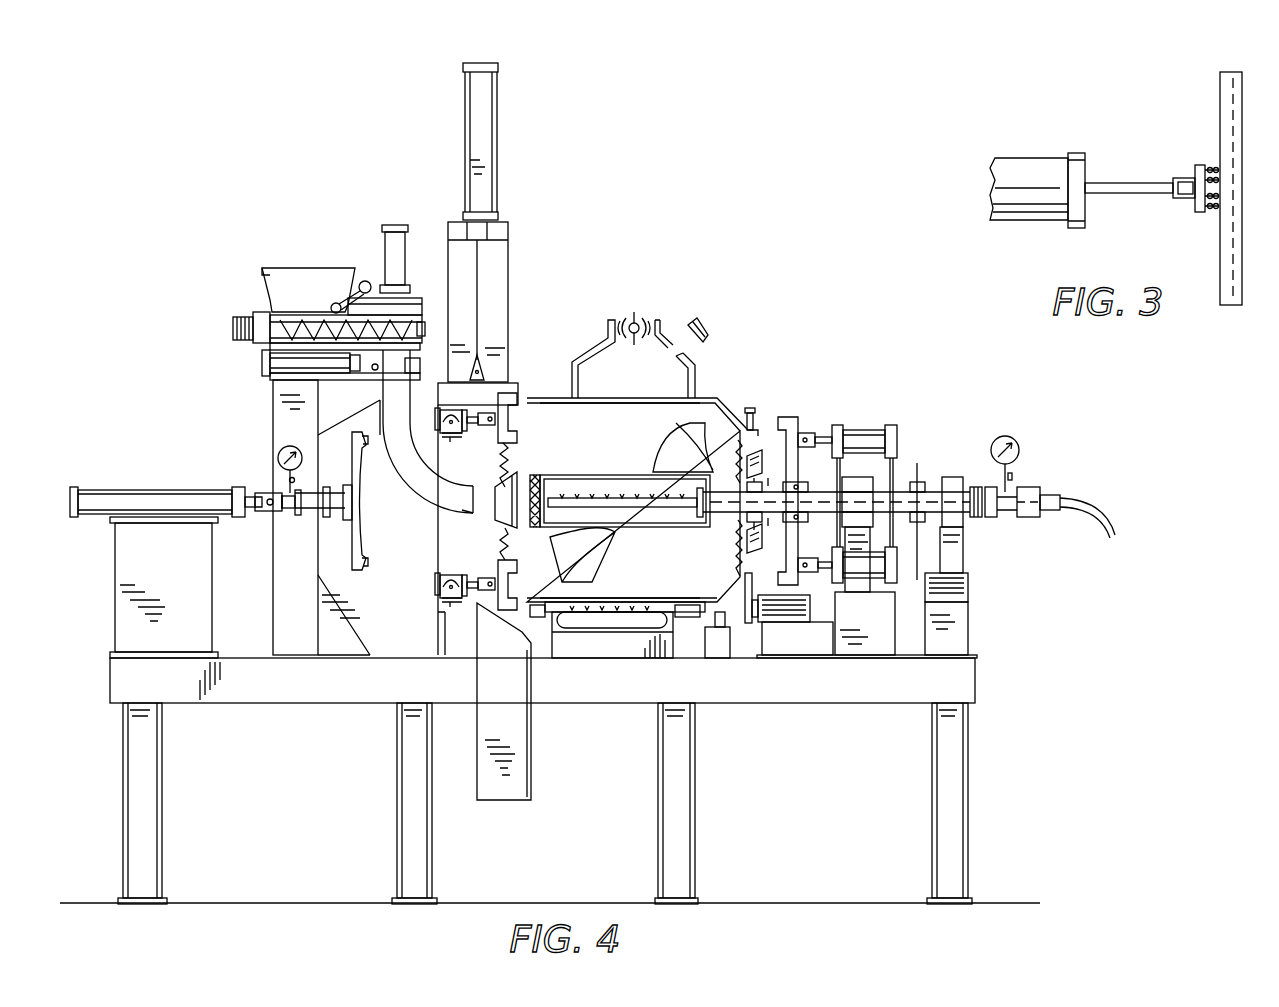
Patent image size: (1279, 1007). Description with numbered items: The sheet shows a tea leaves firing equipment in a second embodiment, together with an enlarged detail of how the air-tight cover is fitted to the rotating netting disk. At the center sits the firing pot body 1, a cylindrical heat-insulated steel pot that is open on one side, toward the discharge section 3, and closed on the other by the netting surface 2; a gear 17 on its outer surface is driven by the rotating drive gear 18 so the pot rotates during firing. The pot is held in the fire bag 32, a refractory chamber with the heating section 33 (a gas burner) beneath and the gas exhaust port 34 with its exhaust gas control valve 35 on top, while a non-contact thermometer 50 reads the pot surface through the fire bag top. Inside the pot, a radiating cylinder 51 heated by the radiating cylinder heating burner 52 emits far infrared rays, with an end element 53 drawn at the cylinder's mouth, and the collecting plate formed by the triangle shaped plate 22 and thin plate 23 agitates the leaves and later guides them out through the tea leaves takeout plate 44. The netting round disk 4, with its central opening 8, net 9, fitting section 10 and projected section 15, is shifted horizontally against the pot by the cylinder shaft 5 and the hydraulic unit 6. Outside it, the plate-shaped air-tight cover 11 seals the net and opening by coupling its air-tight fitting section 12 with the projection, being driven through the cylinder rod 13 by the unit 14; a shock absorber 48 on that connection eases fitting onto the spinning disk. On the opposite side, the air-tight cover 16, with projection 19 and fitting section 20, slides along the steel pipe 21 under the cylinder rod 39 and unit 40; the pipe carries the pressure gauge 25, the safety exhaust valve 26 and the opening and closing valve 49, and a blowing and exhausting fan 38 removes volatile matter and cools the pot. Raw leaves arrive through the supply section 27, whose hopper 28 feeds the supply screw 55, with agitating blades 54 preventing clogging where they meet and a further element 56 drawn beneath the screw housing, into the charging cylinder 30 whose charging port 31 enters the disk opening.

In FIG. 4, the firing pot body 1 is at (588, 396).
In FIG. 4, the netting surface 2 is at (737, 552).
In FIG. 4, the discharge section 3 is at (527, 432).
In FIG. 4, the netting round disk 4 is at (507, 583).
In FIG. 4, the cylinder shaft 5 is at (480, 603).
In FIG. 4, the air pressure or hydraulic unit 6 is at (437, 587).
In FIG. 4, the opening 8 is at (507, 500).
In FIG. 4, the net 9 is at (503, 460).
In FIG. 4, the fitting section 10 is at (515, 392).
In FIG. 3, the air-tight cover 11 is at (1242, 140).
In FIG. 4, the air-tight cover 11 is at (362, 515).
In FIG. 4, the air-tight fitting section 12 is at (366, 560).
In FIG. 3, the cylinder rod 13 is at (1134, 182).
In FIG. 4, the cylinder rod 13 is at (252, 510).
In FIG. 3, the air compressor or hydraulic unit 14 is at (1035, 162).
In FIG. 4, the air compressor or hydraulic unit 14 is at (188, 491).
In FIG. 4, the projected section 15 is at (497, 562).
In FIG. 4, the air-tight cover 16 is at (800, 425).
In FIG. 4, the gear 17 is at (749, 406).
In FIG. 4, the rotating drive gear 18 is at (748, 630).
In FIG. 4, the projection 19 is at (762, 472).
In FIG. 4, the fitting section 20 is at (790, 415).
In FIG. 4, the steel pipe 21 is at (714, 514).
In FIG. 4, the triangle shaped plate 22 is at (672, 443).
In FIG. 4, the thin plate 23 is at (596, 560).
In FIG. 4, the pressure gauge 25 is at (1000, 437).
In FIG. 4, the safety exhaust valve 26 is at (1030, 487).
In FIG. 4, the raw tea leaves supply section 27 is at (378, 397).
In FIG. 4, the hopper 28 is at (268, 283).
In FIG. 4, the tea leaves charging cylinder 30 is at (410, 465).
In FIG. 4, the tea leaves charging port 31 is at (462, 500).
In FIG. 4, the fire bag 32 is at (625, 650).
In FIG. 4, the heating section 33 is at (596, 620).
In FIG. 4, the gas exhaust port 34 is at (697, 370).
In FIG. 4, the exhaust gas control valve 35 is at (630, 322).
In FIG. 4, the blowing and exhausting fan 38 is at (748, 455).
In FIG. 4, the cylinder rod 39 is at (840, 585).
In FIG. 4, the hydraulic unit or air compressor 40 is at (868, 428).
In FIG. 4, the tea leaves takeout plate 44 is at (522, 735).
In FIG. 3, the shock absorber 48 is at (1200, 165).
In FIG. 4, the opening and closing valve 49 is at (1050, 512).
In FIG. 4, the non-contact thermometer 50 is at (704, 322).
In FIG. 4, the radiating cylinder 51 is at (590, 475).
In FIG. 4, the radiating cylinder heating burner 52 is at (662, 507).
In FIG. 4, the mesh 53 is at (535, 475).
In FIG. 4, the raw tea leaves agitating blades 54 is at (337, 300).
In FIG. 4, the raw tea leaves supply screw 55 is at (300, 318).
In FIG. 4, the cylinder 56 is at (265, 362).